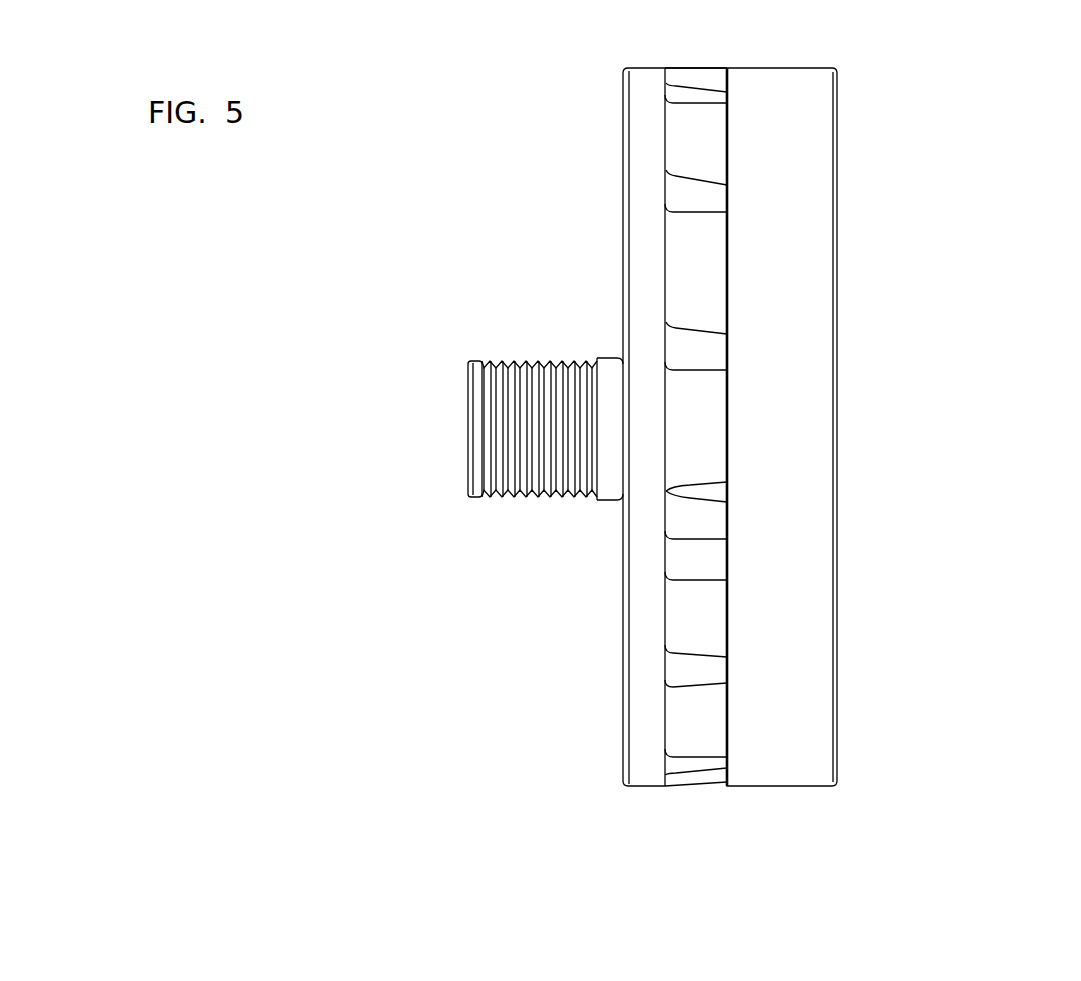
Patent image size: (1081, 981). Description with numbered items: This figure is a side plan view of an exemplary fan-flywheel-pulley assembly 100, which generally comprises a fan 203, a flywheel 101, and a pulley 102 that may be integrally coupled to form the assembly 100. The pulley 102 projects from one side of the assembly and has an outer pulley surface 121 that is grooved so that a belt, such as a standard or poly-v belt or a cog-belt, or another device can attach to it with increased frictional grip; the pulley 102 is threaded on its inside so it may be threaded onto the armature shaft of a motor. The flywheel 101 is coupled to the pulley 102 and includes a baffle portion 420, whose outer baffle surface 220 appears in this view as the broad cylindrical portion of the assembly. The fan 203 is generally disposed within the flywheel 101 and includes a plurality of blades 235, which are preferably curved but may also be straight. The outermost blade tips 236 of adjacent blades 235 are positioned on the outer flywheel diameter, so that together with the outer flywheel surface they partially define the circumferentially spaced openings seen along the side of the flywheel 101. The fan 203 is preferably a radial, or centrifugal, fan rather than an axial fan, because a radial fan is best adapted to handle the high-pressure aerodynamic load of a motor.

The fan-flywheel-pulley assembly 100 is at (873, 237).
The flywheel 101 is at (680, 793).
The pulley 102 is at (498, 523).
The outer pulley surface 121 is at (503, 360).
The fan 203 is at (676, 65).
The outer baffle surface 220 is at (784, 100).
The blades 235 is at (692, 144).
The outermost blade tips 236 is at (685, 198).
The baffle portion 420 is at (793, 793).